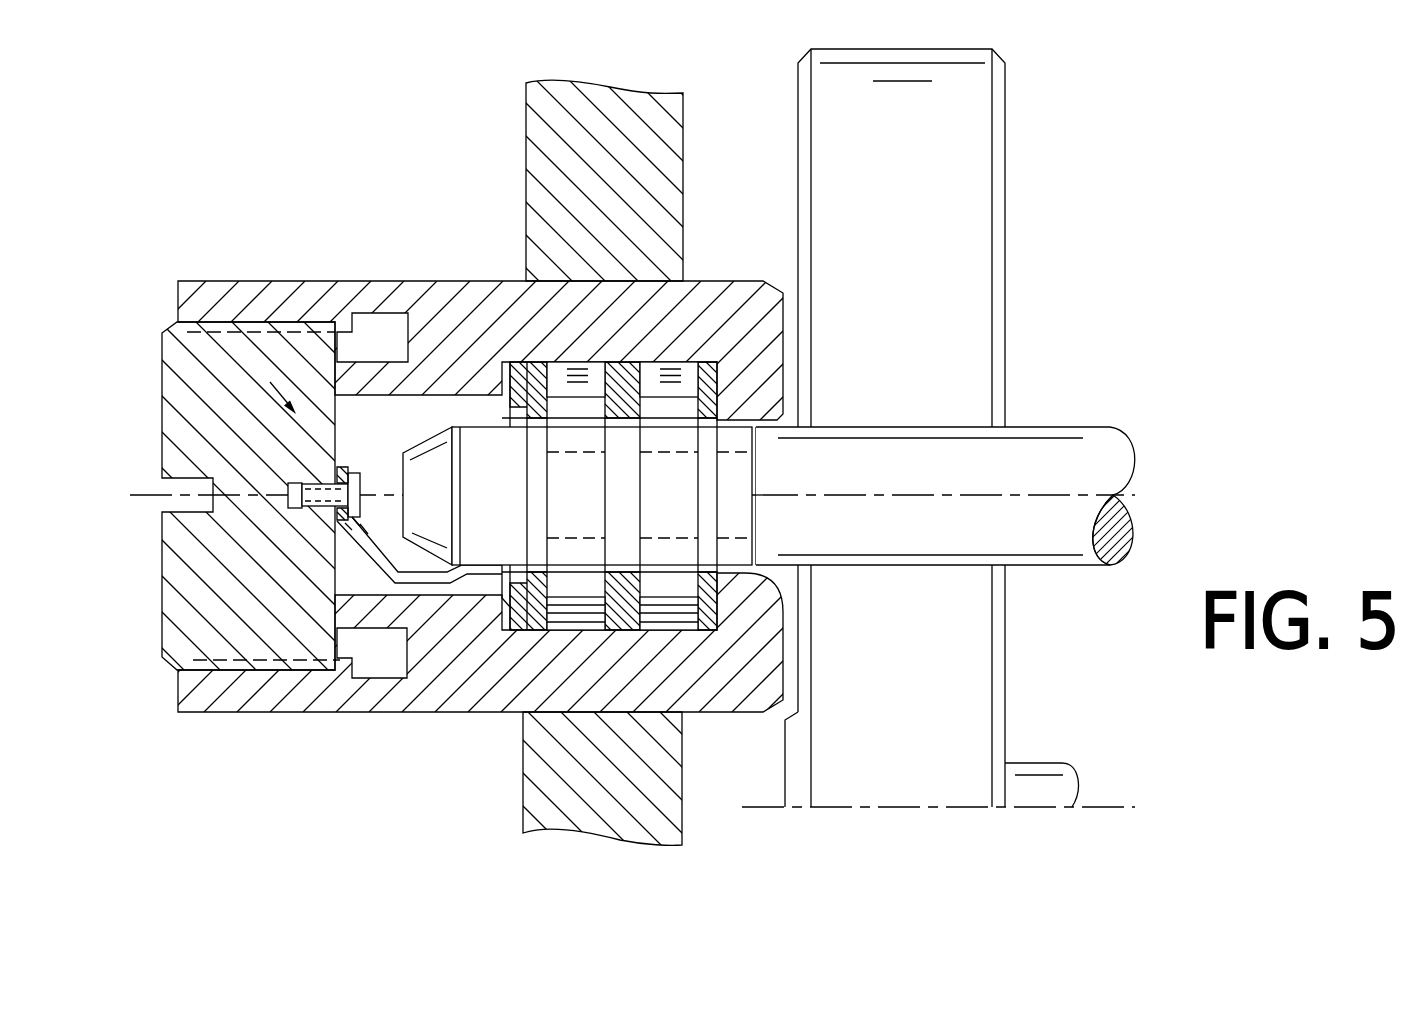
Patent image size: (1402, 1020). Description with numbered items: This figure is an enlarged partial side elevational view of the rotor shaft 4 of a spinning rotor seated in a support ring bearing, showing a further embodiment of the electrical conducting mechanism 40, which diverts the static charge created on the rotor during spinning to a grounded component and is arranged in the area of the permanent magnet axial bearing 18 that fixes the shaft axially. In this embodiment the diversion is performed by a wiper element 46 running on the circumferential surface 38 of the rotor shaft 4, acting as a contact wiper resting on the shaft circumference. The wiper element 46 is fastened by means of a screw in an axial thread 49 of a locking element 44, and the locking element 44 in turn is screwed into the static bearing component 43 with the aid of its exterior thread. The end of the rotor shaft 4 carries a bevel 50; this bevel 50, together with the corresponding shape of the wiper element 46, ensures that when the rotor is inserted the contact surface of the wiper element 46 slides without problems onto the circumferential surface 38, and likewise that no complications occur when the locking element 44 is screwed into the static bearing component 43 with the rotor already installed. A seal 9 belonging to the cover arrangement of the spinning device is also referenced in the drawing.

The rotor shaft 4 is at (1082, 452).
The seal 9 is at (500, 362).
The permanent magnet axial bearing 18 is at (178, 782).
The circumferential surface 38 is at (487, 450).
The electrical conducting mechanism 40 is at (177, 283).
The static bearing component 43 is at (218, 307).
The locking element 44 is at (192, 592).
The wiper element 46 is at (430, 580).
The axial thread 49 is at (300, 482).
The bevel 50 is at (432, 535).